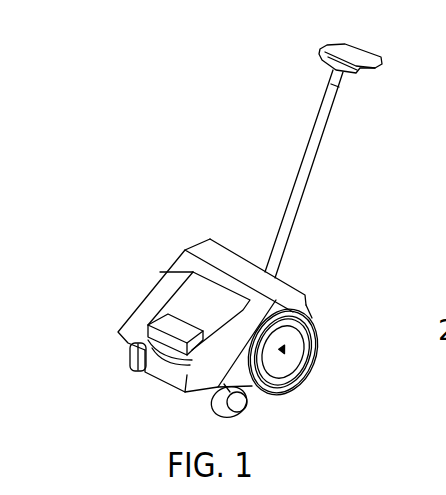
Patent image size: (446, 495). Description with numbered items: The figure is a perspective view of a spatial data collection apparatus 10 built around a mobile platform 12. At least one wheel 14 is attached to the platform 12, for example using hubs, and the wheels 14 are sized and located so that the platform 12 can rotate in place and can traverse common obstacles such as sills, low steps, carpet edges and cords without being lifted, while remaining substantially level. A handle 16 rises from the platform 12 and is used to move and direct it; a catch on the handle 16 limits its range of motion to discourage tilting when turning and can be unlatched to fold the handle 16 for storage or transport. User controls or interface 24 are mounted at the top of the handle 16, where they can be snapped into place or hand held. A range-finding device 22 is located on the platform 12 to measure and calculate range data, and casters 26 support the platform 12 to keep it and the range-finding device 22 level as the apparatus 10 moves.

The spatial data collection apparatus 10 is at (163, 153).
The mobile platform 12 is at (197, 245).
The wheel 14 is at (290, 386).
The handle 16 is at (316, 155).
The range-finding device 22 is at (133, 327).
The user controls or interface 24 is at (353, 73).
The casters 26 is at (130, 360).